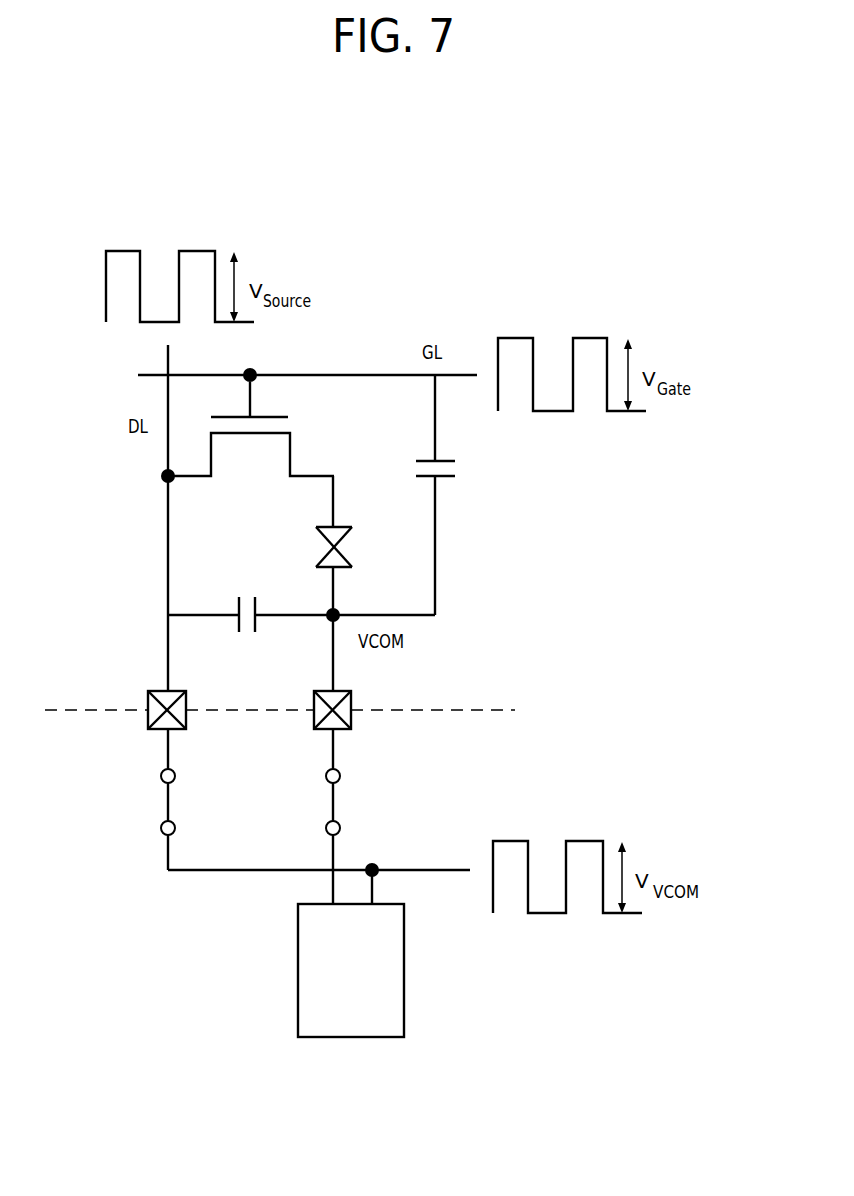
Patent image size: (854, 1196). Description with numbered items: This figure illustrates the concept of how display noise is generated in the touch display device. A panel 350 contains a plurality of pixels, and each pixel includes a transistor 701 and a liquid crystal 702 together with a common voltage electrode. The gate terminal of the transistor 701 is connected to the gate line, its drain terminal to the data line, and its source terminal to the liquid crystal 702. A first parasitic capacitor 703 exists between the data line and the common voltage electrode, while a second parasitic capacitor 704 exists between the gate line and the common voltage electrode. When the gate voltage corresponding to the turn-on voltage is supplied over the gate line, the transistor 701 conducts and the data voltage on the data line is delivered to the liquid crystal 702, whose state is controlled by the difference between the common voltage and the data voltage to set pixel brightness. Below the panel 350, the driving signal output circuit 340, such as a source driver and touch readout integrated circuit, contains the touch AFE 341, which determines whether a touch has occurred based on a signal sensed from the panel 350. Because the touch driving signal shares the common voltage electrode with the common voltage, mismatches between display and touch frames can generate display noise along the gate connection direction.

The transistor 701 is at (292, 427).
The liquid crystal 702 is at (354, 545).
The first parasitic capacitor 703 is at (248, 588).
The second parasitic capacitor 704 is at (457, 470).
The panel 350 is at (92, 672).
The driving signal output circuit 340 is at (88, 750).
The touch analog front end 341 is at (404, 968).